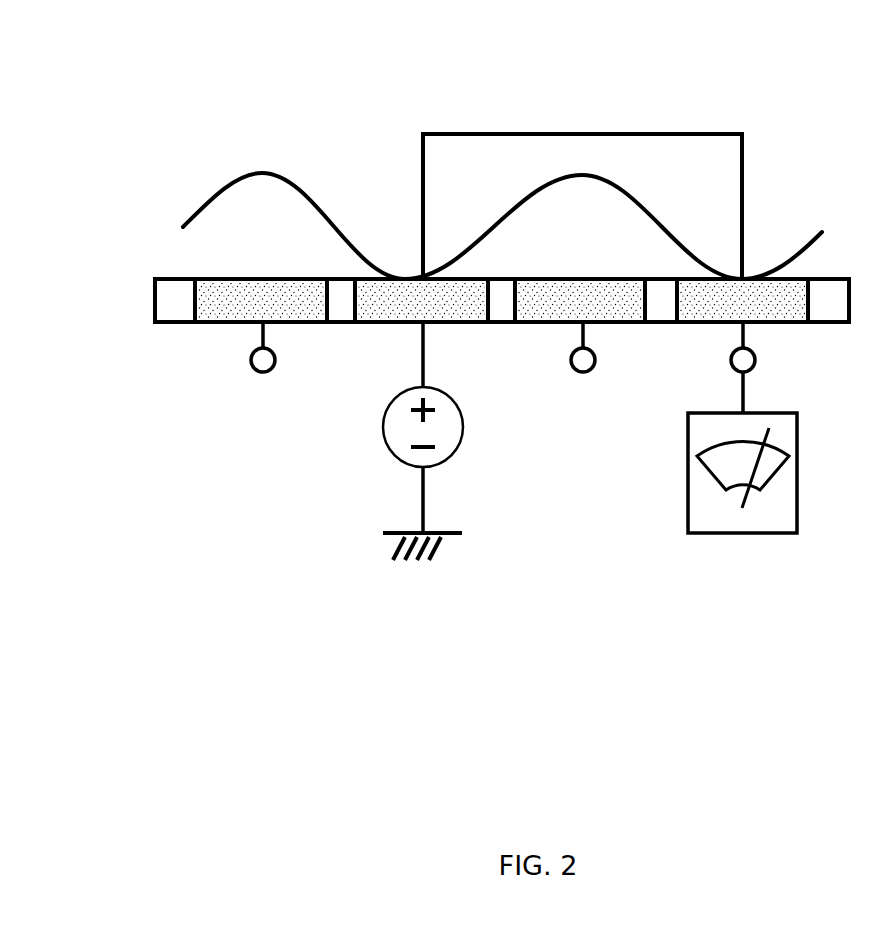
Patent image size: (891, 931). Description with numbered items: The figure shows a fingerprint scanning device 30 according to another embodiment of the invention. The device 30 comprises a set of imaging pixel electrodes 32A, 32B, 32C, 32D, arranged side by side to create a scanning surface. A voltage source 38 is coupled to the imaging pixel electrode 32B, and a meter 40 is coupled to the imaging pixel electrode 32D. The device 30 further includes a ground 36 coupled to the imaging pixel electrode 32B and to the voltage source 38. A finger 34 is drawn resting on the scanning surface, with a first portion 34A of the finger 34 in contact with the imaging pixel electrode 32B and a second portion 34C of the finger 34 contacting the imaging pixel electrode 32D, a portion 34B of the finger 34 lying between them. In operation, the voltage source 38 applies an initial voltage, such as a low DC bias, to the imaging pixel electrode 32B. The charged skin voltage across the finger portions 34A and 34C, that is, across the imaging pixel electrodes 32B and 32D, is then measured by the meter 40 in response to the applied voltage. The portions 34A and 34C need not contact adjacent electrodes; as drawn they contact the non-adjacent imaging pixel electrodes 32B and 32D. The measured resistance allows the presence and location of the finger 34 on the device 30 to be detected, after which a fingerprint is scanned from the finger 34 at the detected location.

The fingerprint scanning device 30 is at (107, 103).
The imaging pixel electrode 32A is at (252, 278).
The imaging pixel electrode 32B is at (367, 278).
The imaging pixel electrode 32C is at (583, 278).
The imaging pixel electrode 32D is at (795, 278).
The finger 34 is at (247, 167).
The first portion of finger 34A is at (401, 278).
The portion of finger 34B is at (578, 175).
The second portion of finger 34C is at (762, 272).
The ground 36 is at (450, 547).
The voltage source 38 is at (465, 425).
The meter 40 is at (797, 470).